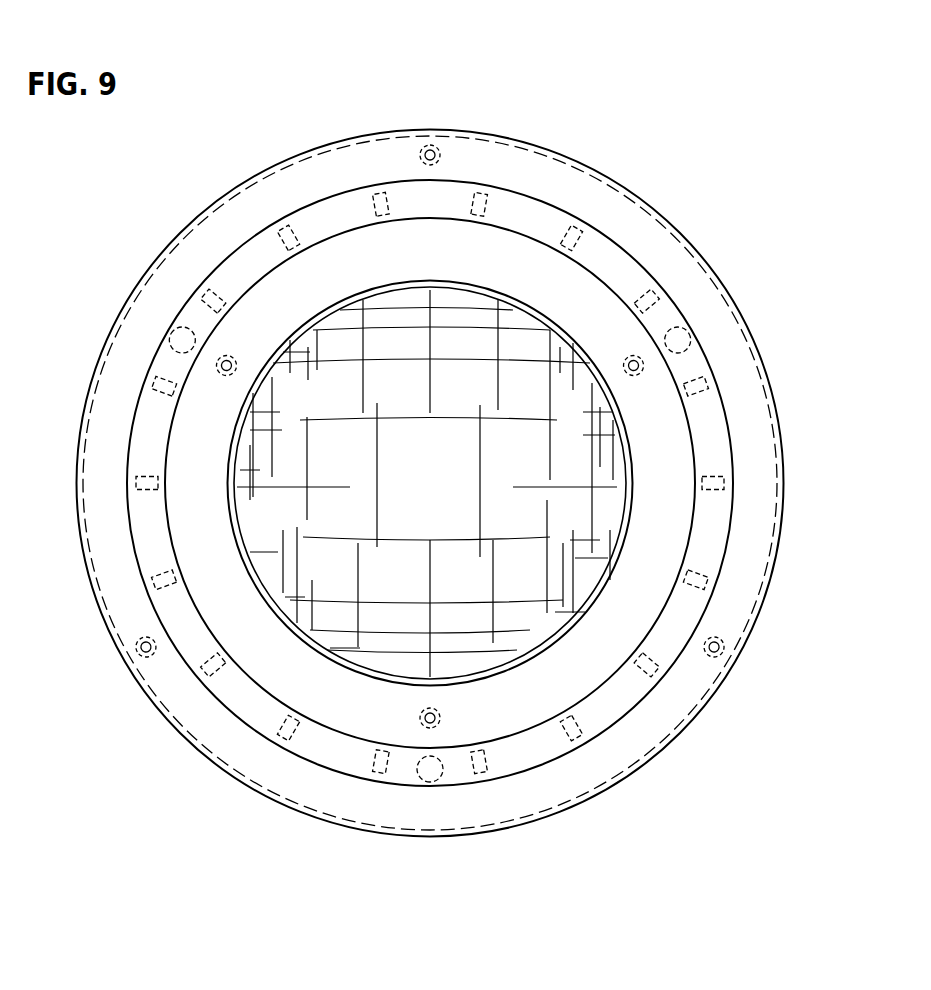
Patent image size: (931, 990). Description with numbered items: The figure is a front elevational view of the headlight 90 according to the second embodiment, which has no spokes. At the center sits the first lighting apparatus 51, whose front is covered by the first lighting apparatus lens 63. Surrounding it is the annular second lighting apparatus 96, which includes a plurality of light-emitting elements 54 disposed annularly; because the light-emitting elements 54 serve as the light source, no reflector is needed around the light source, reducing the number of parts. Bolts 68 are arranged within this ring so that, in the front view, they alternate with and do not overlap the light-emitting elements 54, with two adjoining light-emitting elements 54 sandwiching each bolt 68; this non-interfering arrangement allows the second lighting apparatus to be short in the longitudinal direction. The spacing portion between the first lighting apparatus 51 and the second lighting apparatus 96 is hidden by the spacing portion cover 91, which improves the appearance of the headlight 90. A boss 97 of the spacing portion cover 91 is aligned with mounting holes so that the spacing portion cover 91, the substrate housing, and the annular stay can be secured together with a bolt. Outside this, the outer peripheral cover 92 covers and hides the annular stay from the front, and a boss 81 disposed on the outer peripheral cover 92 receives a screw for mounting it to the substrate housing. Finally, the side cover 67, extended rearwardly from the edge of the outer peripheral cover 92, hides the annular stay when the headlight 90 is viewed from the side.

The headlight 90 is at (622, 86).
The boss 81 is at (433, 143).
The light-emitting element 54 is at (378, 207).
The boss 97 is at (218, 354).
The bolt 68 is at (170, 339).
The second lighting apparatus 96 is at (126, 546).
The first lighting apparatus lens 63 is at (255, 518).
The first lighting apparatus 51 is at (288, 637).
The spacing portion cover 91 is at (458, 726).
The outer peripheral cover 92 is at (642, 732).
The side cover 67 is at (703, 705).